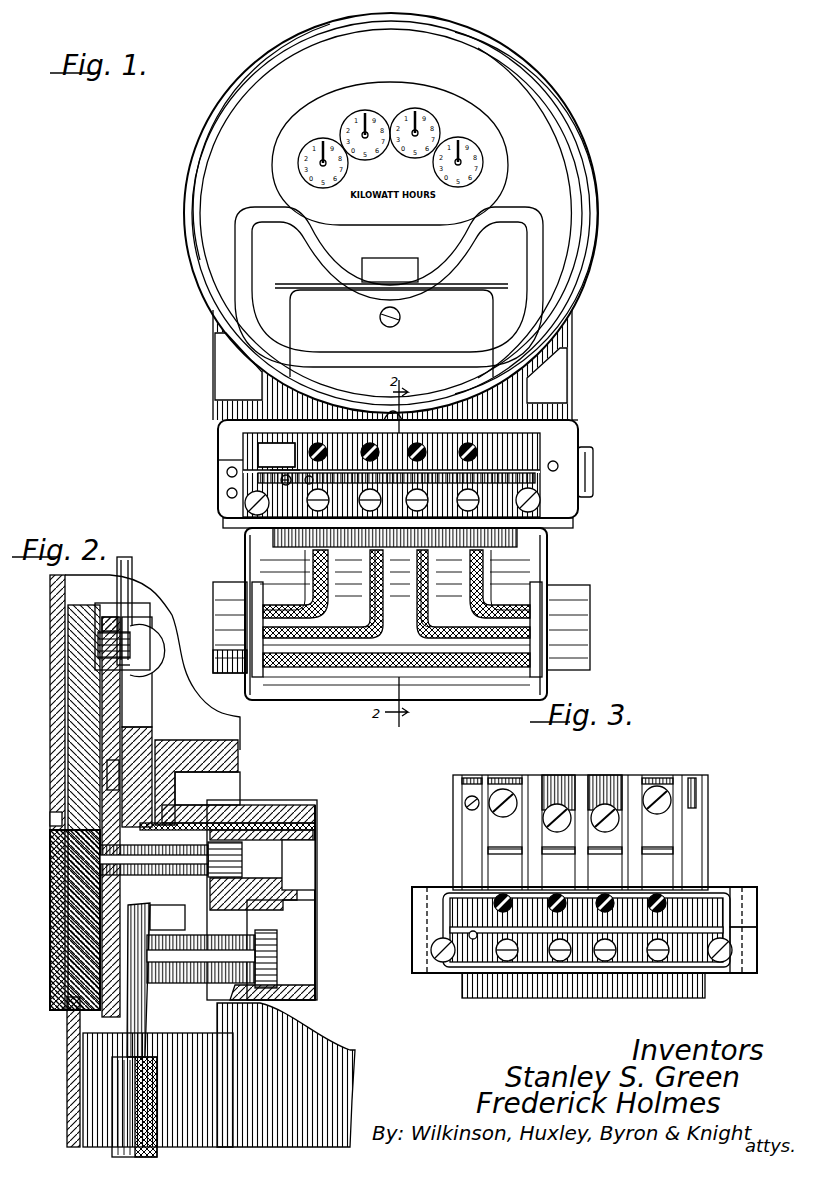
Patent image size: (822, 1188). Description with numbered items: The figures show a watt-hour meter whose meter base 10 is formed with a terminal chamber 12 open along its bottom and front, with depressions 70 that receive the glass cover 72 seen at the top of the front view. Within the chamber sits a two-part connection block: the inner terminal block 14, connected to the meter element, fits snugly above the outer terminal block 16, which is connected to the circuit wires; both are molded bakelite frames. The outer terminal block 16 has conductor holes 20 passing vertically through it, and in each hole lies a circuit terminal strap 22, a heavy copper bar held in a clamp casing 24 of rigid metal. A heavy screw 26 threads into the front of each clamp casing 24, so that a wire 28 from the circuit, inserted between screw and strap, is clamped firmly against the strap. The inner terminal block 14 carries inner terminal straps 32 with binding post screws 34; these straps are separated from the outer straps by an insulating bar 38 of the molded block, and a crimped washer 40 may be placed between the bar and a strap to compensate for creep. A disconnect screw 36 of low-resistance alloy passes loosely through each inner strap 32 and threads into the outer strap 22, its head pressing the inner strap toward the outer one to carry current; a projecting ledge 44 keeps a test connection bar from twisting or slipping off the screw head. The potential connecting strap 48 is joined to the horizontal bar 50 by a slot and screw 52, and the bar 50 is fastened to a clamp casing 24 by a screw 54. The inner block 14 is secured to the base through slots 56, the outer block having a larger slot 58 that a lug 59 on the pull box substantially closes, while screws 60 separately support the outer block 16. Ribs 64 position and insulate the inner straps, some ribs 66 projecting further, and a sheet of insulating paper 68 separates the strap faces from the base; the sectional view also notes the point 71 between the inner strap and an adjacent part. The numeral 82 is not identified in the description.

In FIG. 1, the meter base 10 is at (548, 378).
In FIG. 2, the meter base 10 is at (50, 800).
In FIG. 1, the terminal chamber 12 is at (577, 442).
In FIG. 2, the terminal chamber 12 is at (256, 805).
In FIG. 1, the inner terminal block 14 is at (258, 453).
In FIG. 2, the inner terminal block 14 is at (313, 830).
In FIG. 3, the inner terminal block 14 is at (720, 888).
In FIG. 1, the outer terminal block 16 is at (230, 482).
In FIG. 2, the outer terminal block 16 is at (55, 935).
In FIG. 2, the conductor holes 20 is at (182, 1035).
In FIG. 2, the circuit terminal strap 22 is at (50, 912).
In FIG. 2, the clamp casing 24 is at (68, 1028).
In FIG. 3, the clamp casing 24 is at (495, 960).
In FIG. 1, the heavy screw 26 is at (410, 497).
In FIG. 2, the heavy screw 26 is at (270, 968).
In FIG. 3, the heavy screw 26 is at (560, 962).
In FIG. 1, the wire 28 is at (470, 605).
In FIG. 2, the wire 28 is at (140, 1068).
In FIG. 2, the inner terminal strap 32 is at (120, 742).
In FIG. 3, the inner terminal strap 32 is at (557, 800).
In FIG. 2, the binding post screw 34 is at (150, 668).
In FIG. 3, the binding post screw 34 is at (500, 790).
In FIG. 1, the disconnect screw 36 is at (318, 444).
In FIG. 2, the disconnect screw 36 is at (185, 812).
In FIG. 3, the disconnect screw 36 is at (505, 893).
In FIG. 2, the insulating bar 38 is at (148, 980).
In FIG. 2, the crimped washer 40 is at (167, 917).
In FIG. 1, the projecting ledge 44 is at (487, 470).
In FIG. 1, the potential connecting strap 48 is at (290, 462).
In FIG. 3, the potential connecting strap 48 is at (470, 833).
In FIG. 1, the horizontal bar 50 is at (298, 488).
In FIG. 1, the screw 52 is at (282, 490).
In FIG. 3, the screw 52 is at (472, 930).
In FIG. 1, the screw 54 is at (313, 482).
In FIG. 3, the slots 56 is at (757, 910).
In FIG. 3, the slot 58 is at (752, 945).
In FIG. 1, the lug 59 is at (548, 510).
In FIG. 1, the screws 60 is at (548, 522).
In FIG. 3, the screws 60 is at (443, 963).
In FIG. 3, the ribs 64 is at (580, 780).
In FIG. 3, the ribs 66 is at (680, 826).
In FIG. 1, the insulating paper 68 is at (510, 425).
In FIG. 2, the insulating paper 68 is at (152, 755).
In FIG. 2, the depressions 70 is at (180, 790).
In FIG. 2, the point 71 is at (108, 775).
In FIG. 1, the glass cover 72 is at (565, 220).
In FIG. 2, the opening 82 is at (258, 940).